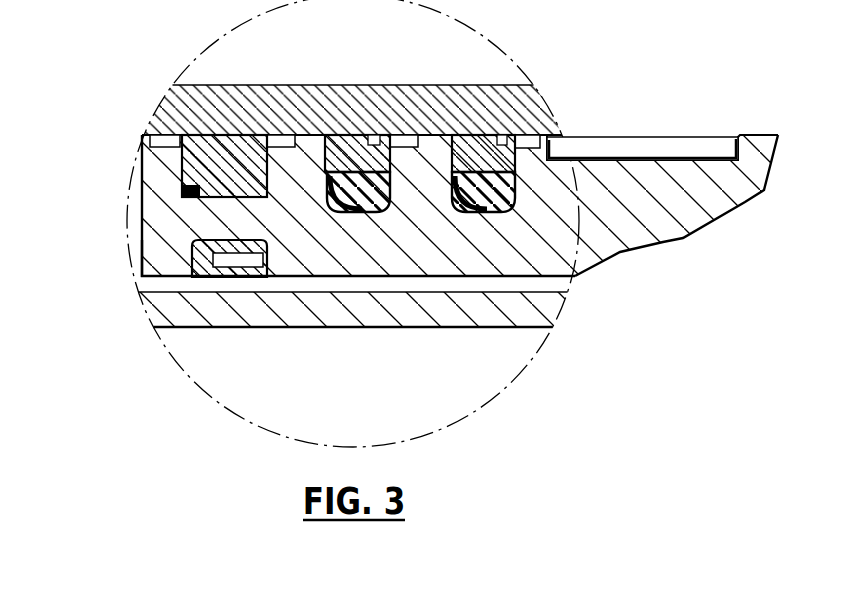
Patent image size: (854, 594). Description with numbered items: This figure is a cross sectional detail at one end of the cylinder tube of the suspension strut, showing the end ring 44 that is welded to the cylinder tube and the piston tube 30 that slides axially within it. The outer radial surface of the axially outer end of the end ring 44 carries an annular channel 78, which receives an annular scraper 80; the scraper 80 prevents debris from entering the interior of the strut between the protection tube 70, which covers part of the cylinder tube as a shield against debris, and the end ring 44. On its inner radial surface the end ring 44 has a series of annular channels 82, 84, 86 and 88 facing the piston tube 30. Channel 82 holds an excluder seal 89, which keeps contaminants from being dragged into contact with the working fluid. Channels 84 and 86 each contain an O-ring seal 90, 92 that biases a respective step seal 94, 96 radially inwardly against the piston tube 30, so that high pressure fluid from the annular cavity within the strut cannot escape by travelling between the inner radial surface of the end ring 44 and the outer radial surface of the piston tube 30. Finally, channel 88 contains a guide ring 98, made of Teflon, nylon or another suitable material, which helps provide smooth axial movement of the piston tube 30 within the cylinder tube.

The piston tube 30 is at (277, 101).
The end ring 44 is at (153, 198).
The protection tube 70 is at (304, 316).
The annular channel 78 is at (190, 247).
The annular scraper 80 is at (212, 286).
The annular channel 82 is at (277, 148).
The annular channel 84 is at (431, 177).
The annular channel 86 is at (527, 188).
The annular channel 88 is at (568, 162).
The excluder seal 89 is at (193, 162).
The O-ring seal 90 is at (345, 188).
The O-ring seal 92 is at (476, 207).
The step seal 94 is at (368, 152).
The step seal 96 is at (458, 142).
The guide ring 98 is at (662, 146).